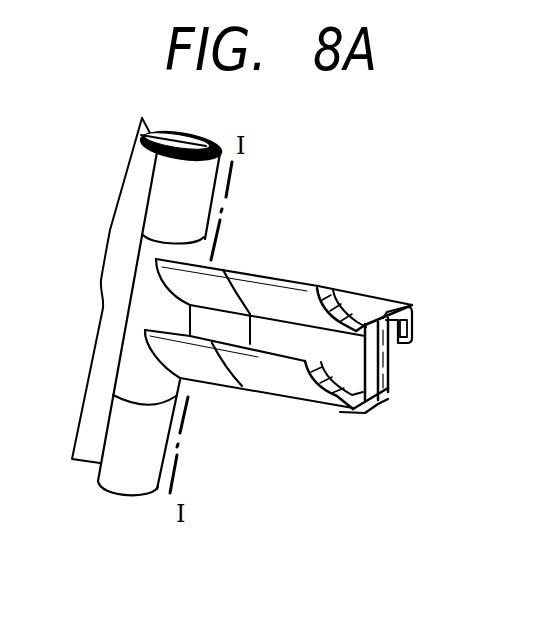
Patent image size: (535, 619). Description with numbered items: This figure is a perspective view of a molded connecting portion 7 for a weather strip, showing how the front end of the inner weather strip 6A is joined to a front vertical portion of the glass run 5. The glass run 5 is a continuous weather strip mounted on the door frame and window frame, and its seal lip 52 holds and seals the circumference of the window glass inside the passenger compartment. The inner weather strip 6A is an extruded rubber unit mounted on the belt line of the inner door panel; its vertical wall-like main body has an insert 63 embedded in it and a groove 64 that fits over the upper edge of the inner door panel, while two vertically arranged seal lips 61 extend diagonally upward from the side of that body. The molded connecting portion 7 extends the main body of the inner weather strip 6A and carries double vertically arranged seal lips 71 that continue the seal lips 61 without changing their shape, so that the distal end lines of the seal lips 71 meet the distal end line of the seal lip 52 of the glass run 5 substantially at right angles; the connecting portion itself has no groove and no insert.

The glass run 5 is at (112, 160).
The seal lip 52 is at (122, 480).
The molded connecting portion 7 is at (278, 318).
The double vertically arranged seal lips 71 is at (218, 295).
The inner weather strip 6A is at (385, 347).
The double vertically arranged seal lips 61 is at (370, 292).
The insert 63 is at (384, 395).
The groove 64 is at (401, 344).